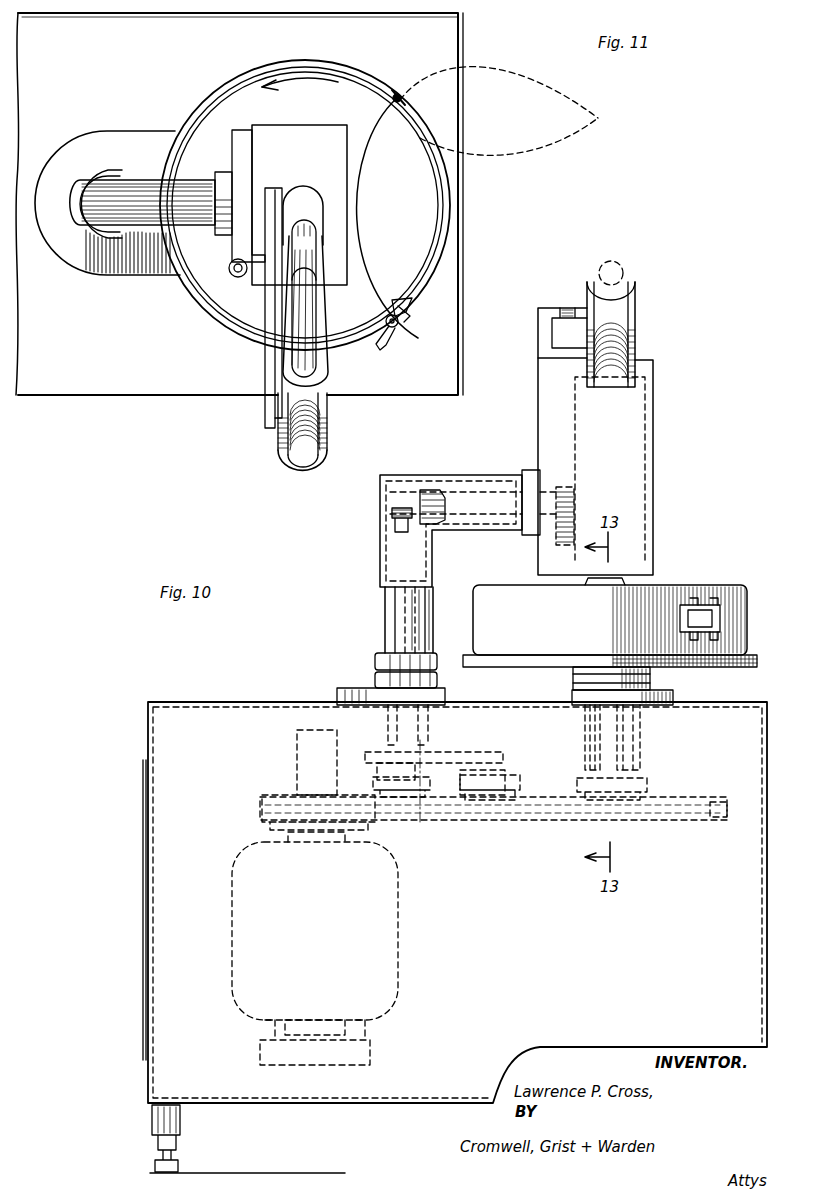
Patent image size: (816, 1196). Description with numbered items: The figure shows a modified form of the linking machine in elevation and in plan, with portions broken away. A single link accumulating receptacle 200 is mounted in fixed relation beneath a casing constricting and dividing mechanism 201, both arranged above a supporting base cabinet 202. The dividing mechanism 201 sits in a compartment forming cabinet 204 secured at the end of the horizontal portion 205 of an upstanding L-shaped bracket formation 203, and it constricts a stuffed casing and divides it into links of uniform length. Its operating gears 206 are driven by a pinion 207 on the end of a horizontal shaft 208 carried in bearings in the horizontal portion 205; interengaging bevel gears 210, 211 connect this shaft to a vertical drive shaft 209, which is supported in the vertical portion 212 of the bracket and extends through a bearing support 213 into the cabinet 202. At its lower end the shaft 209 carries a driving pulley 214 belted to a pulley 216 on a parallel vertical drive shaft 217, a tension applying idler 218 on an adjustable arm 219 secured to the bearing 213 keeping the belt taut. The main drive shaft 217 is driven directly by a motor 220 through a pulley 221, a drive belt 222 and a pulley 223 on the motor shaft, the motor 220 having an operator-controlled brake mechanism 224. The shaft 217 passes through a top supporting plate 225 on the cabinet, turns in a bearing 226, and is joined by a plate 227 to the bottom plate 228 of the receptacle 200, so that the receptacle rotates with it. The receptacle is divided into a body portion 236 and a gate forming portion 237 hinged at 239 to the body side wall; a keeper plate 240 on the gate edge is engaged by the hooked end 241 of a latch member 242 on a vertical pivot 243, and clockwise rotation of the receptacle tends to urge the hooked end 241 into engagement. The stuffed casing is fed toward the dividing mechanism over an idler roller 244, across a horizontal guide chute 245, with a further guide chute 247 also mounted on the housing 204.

In FIG. 11, the link accumulating receptacle 200 is at (228, 325).
In FIG. 10, the link accumulating receptacle 200 is at (690, 585).
In FIG. 10, the casing dividing and constricting mechanism 201 is at (635, 480).
In FIG. 10, the base cabinet 202 is at (230, 718).
In FIG. 10, the L-shaped bracket formation 203 is at (398, 475).
In FIG. 11, the casing or cabinet 204 is at (288, 135).
In FIG. 10, the casing or cabinet 204 is at (653, 395).
In FIG. 11, the horizontal portion of the bracket 205 is at (132, 182).
In FIG. 10, the horizontal portion of the bracket 205 is at (500, 480).
In FIG. 10, the operating gears 206 is at (552, 550).
In FIG. 10, the pinion 207 is at (563, 487).
In FIG. 10, the horizontal shaft 208 is at (478, 495).
In FIG. 10, the vertical drive shaft 209 is at (395, 603).
In FIG. 10, the bevel gear 210 is at (420, 495).
In FIG. 10, the bevel gear 211 is at (392, 512).
In FIG. 10, the vertical portion of the bracket 212 is at (390, 625).
In FIG. 10, the bearing support 213 is at (428, 724).
In FIG. 10, the driving pulley 214 is at (420, 825).
In FIG. 10, the pulley 216 is at (640, 782).
In FIG. 10, the vertical drive shaft 217 is at (618, 735).
In FIG. 10, the tension applying idler 218 is at (485, 800).
In FIG. 10, the adjustable arm 219 is at (465, 760).
In FIG. 10, the driving motor 220 is at (255, 940).
In FIG. 10, the pulley 221 is at (640, 822).
In FIG. 10, the drive belt 222 is at (370, 828).
In FIG. 10, the pulley 223 is at (292, 800).
In FIG. 10, the brake mechanism 224 is at (370, 1052).
In FIG. 11, the top supporting plate 225 is at (83, 262).
In FIG. 10, the top supporting plate 225 is at (535, 695).
In FIG. 10, the bearing 226 is at (585, 722).
In FIG. 10, the plate 227 is at (650, 670).
In FIG. 10, the bottom plate 228 is at (493, 666).
In FIG. 11, the body portion 236 is at (213, 288).
In FIG. 11, the gate forming portion 237 is at (433, 215).
In FIG. 11, the hinge connection 239 is at (398, 96).
In FIG. 11, the keeper plate 240 is at (408, 314).
In FIG. 11, the hooked end 241 is at (405, 303).
In FIG. 11, the latch member 242 is at (381, 346).
In FIG. 11, the vertical pivot 243 is at (399, 324).
In FIG. 11, the idler roller 244 is at (278, 446).
In FIG. 10, the idler roller 244 is at (625, 303).
In FIG. 11, the horizontal guide chute 245 is at (310, 313).
In FIG. 11, the guide chute 247 is at (305, 188).